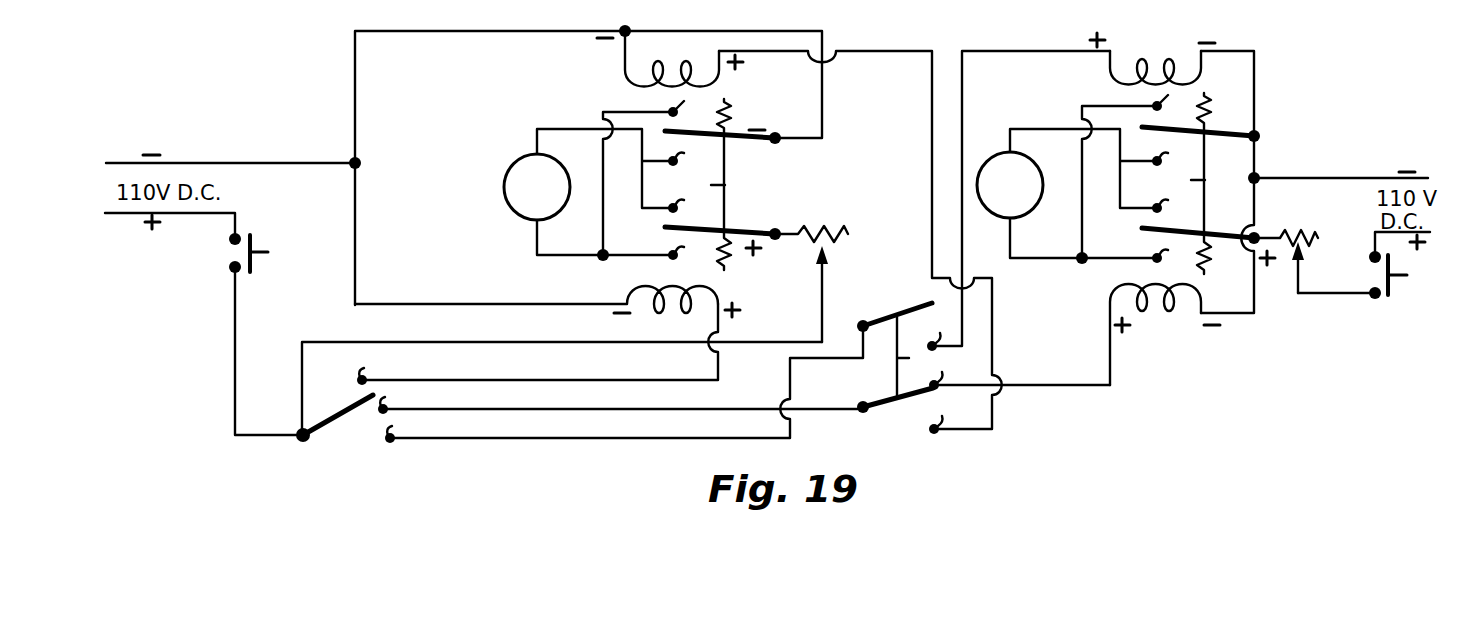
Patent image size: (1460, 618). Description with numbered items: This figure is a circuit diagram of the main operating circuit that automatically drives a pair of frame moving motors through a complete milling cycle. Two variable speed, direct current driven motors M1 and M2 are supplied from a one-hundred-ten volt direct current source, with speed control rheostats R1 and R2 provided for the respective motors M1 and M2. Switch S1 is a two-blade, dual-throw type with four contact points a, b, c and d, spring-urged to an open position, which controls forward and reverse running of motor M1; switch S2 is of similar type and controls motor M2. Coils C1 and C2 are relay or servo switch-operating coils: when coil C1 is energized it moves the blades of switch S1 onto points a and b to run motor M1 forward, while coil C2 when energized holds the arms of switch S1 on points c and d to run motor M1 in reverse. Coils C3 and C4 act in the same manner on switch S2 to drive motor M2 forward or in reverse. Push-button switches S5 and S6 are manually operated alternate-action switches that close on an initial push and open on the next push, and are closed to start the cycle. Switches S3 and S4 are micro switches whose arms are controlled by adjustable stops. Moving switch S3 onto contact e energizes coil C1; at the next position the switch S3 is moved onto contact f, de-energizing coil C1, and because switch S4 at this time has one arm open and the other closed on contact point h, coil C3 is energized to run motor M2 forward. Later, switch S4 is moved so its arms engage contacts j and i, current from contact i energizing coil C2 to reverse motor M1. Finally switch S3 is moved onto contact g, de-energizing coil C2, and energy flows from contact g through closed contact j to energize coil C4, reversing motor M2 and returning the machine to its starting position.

The direct current driven motor M1 is at (537, 187).
The direct current driven motor M2 is at (1010, 185).
The switch S1 is at (726, 178).
The switch S2 is at (1206, 192).
The micro switch S3 is at (340, 418).
The micro switch S4 is at (896, 354).
The push-button switch S5 is at (257, 262).
The push-button switch S6 is at (1395, 288).
The coil C1 is at (670, 310).
The coil C2 is at (676, 34).
The coil C3 is at (1155, 334).
The coil C4 is at (1156, 48).
The speed control rheostat R1 is at (850, 240).
The speed control rheostat R2 is at (1302, 232).
The contact point a is at (925, 161).
The contact point b is at (925, 258).
The contact point c is at (924, 101).
The contact point d is at (925, 208).
The contact e is at (367, 368).
The contact f is at (387, 398).
The contact g is at (396, 427).
The contact point h is at (935, 374).
The contact i is at (936, 417).
The contact j is at (933, 333).